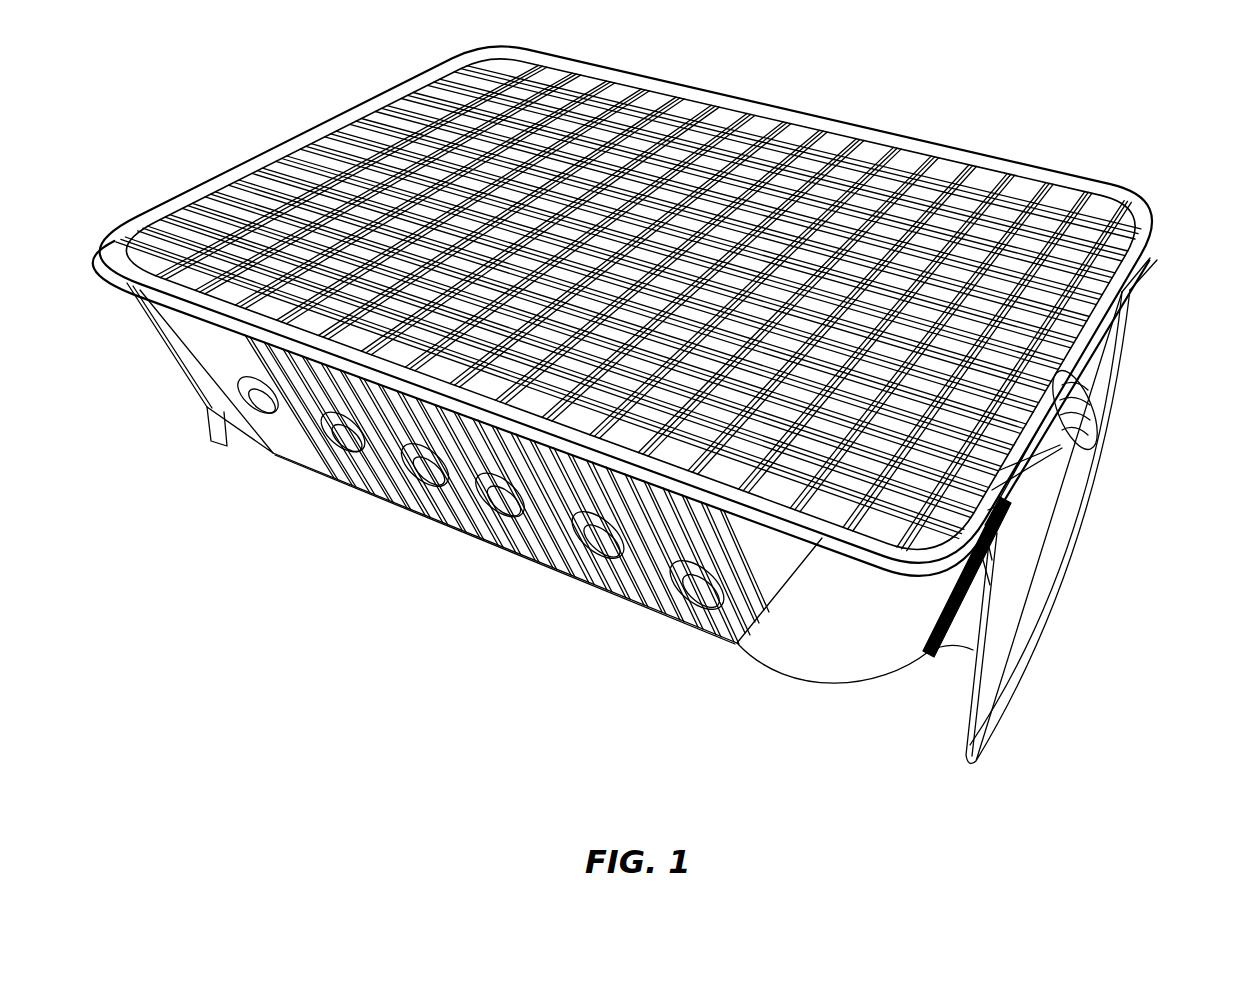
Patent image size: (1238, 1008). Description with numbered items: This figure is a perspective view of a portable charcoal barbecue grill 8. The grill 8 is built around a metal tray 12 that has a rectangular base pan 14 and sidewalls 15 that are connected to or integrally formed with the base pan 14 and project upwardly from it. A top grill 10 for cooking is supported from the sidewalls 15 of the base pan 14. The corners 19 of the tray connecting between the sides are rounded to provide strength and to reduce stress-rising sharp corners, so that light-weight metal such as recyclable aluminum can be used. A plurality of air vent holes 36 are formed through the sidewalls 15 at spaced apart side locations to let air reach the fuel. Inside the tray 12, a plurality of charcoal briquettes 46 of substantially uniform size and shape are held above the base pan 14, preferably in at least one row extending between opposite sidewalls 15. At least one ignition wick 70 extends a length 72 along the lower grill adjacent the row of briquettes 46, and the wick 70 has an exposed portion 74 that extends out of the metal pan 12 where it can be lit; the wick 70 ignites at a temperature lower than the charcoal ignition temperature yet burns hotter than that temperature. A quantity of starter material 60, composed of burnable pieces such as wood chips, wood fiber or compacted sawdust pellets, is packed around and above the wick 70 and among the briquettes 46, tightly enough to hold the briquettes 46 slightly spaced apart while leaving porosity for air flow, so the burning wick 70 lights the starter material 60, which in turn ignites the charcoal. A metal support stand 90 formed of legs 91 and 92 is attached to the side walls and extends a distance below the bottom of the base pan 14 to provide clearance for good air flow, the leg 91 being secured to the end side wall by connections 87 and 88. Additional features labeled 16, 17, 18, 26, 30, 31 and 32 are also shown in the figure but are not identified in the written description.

The portable charcoal barbecue grill 8 is at (634, 387).
The top grill 10 is at (628, 307).
The metal tray 12 is at (874, 612).
The base pan 14 is at (623, 505).
The sidewalls 15 is at (682, 489).
The rim edge 16 is at (985, 506).
The rib 17 is at (388, 462).
The top grid 18 is at (628, 303).
The corners 19 is at (907, 630).
The rim flange 26 is at (222, 170).
The front wall 30 is at (623, 472).
The bottom edge 31 is at (290, 463).
The pivot 32 is at (950, 620).
The air vent holes 36 is at (692, 605).
The charcoal briquettes 46 is at (435, 160).
The starter material 60 is at (980, 492).
The ignition wick 70 is at (1075, 448).
The length 72 is at (978, 478).
The exposed portion 74 is at (1090, 390).
The connection 87 is at (1135, 290).
The connection 88 is at (988, 555).
The metal support stand 90 is at (1066, 514).
The leg 91 is at (1000, 706).
The leg 92 is at (213, 432).